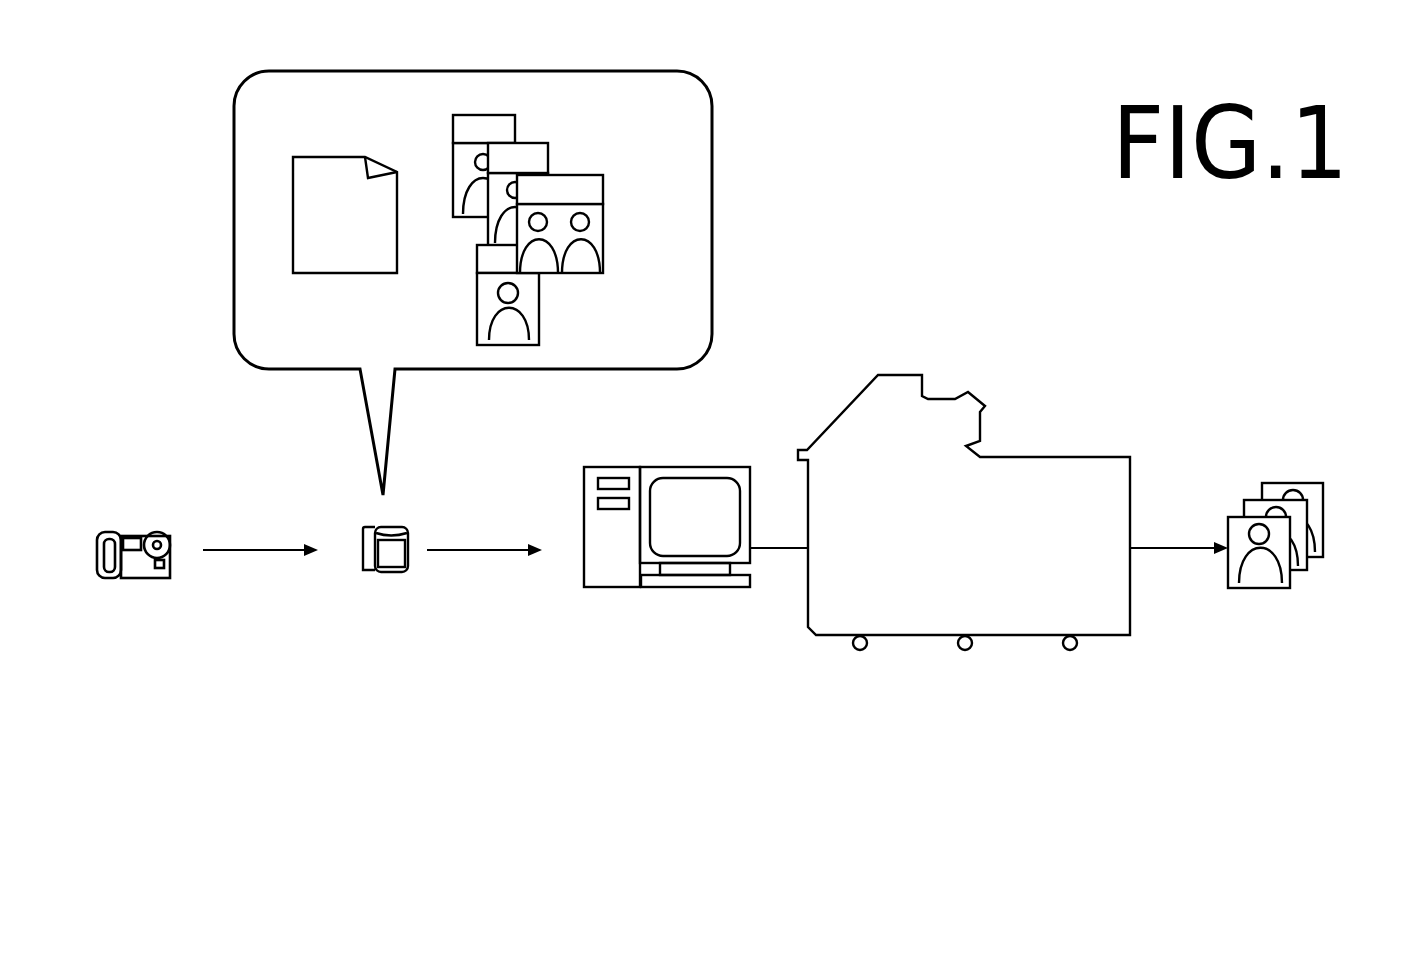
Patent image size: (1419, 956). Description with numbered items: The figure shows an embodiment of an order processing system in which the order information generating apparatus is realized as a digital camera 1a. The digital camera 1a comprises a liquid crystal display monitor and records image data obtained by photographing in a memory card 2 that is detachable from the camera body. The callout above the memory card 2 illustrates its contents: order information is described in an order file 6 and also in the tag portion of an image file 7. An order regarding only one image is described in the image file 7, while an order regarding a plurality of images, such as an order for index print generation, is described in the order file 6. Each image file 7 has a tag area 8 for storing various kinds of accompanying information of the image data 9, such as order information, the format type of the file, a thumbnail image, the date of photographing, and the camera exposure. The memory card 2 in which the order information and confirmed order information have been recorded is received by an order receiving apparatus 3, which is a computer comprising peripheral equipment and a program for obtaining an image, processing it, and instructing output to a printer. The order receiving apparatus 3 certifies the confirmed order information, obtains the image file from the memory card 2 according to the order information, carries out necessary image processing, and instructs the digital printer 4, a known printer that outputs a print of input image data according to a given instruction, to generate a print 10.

The digital camera 1a is at (105, 578).
The memory card 2 is at (388, 572).
The order receiving apparatus 3 is at (700, 467).
The digital printer 4 is at (1082, 457).
The order file 6 is at (350, 275).
The image file 7 is at (552, 224).
The tag area 8 is at (603, 190).
The image data 9 is at (603, 245).
The print 10 is at (1323, 493).